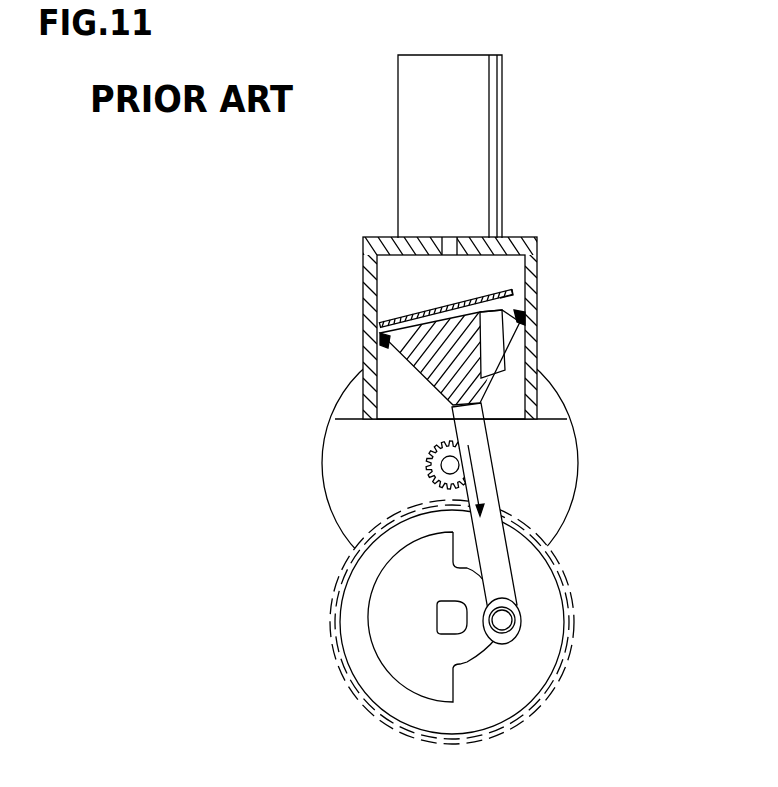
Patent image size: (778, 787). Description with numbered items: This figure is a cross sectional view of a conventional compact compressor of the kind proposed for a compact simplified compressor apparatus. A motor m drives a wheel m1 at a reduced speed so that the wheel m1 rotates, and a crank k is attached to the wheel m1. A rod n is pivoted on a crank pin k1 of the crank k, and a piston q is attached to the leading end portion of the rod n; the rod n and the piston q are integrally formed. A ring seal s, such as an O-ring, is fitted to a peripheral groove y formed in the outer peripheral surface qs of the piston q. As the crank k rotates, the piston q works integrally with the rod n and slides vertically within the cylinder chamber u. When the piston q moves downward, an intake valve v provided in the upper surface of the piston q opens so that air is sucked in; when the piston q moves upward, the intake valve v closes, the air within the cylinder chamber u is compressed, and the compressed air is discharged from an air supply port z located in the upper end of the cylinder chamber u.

The air supply port z is at (450, 240).
The cylinder chamber u is at (512, 264).
The outer peripheral surface qs is at (532, 298).
The ring seal s is at (525, 316).
The peripheral groove y is at (527, 332).
The piston q is at (467, 392).
The intake valve v is at (477, 297).
The motor m is at (578, 483).
The rod n is at (508, 578).
The crank pin k1 is at (500, 611).
The crank k is at (490, 645).
The wheel m1 is at (348, 684).